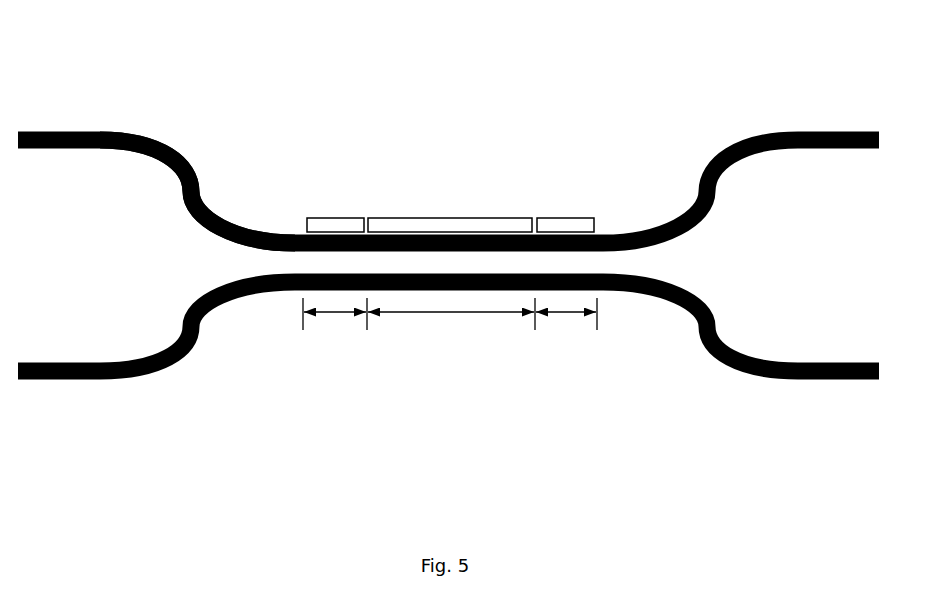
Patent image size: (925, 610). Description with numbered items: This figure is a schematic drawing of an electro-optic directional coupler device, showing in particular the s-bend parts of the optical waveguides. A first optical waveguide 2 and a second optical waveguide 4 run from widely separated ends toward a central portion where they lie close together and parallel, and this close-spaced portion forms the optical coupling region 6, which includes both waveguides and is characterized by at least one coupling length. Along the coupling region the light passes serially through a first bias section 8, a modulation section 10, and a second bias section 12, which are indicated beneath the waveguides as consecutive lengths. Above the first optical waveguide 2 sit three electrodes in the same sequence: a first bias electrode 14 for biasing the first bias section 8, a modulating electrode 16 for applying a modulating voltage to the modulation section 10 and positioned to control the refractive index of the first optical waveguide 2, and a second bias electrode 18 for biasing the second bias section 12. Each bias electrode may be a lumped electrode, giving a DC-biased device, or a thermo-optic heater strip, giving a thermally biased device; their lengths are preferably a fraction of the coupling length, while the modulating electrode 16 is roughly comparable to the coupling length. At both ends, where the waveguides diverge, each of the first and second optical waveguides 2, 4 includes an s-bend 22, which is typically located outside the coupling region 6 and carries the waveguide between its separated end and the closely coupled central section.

The first optical waveguide 2 is at (56, 130).
The second optical waveguide 4 is at (57, 380).
The optical coupling region 6 is at (448, 239).
The first bias section 8 is at (343, 322).
The modulation section 10 is at (462, 322).
The second bias section 12 is at (582, 322).
The first bias electrode 14 is at (335, 218).
The modulating electrode 16 is at (450, 218).
The second bias electrode 18 is at (565, 218).
The s-bend 22 is at (207, 190).